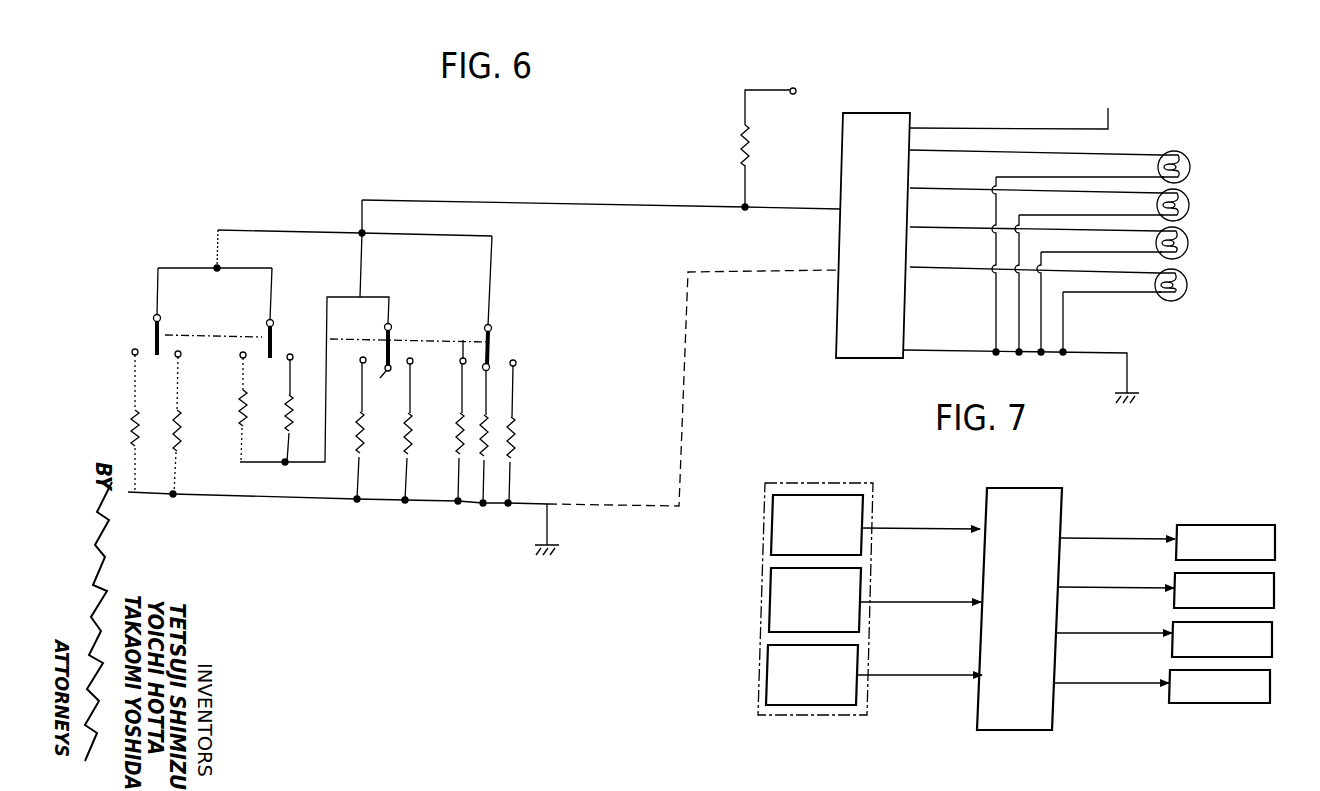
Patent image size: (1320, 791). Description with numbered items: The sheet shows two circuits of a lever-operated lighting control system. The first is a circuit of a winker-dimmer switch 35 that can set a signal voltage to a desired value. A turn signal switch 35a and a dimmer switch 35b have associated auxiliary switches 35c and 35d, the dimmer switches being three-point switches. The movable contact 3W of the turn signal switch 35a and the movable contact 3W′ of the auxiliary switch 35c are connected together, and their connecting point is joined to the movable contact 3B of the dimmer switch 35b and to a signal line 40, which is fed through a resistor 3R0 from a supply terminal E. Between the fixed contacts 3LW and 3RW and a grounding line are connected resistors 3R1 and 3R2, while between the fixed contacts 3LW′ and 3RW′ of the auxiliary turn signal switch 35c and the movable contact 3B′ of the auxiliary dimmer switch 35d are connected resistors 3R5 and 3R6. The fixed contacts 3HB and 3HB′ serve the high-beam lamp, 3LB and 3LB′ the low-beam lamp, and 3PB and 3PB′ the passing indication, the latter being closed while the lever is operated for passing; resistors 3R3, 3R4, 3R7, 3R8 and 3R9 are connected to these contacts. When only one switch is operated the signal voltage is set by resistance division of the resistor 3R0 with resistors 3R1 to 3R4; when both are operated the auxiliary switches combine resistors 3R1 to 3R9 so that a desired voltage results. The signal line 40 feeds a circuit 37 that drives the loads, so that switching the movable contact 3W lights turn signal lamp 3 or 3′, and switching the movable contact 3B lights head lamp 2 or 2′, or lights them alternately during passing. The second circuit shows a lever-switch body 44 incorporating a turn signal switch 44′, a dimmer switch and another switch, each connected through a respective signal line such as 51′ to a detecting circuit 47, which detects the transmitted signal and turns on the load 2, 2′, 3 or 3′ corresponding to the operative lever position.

In FIG. 6, the head lamp 2 is at (1191, 168).
In FIG. 7, the head lamp 2 is at (1276, 543).
In FIG. 6, the head lamp 2′ is at (1190, 206).
In FIG. 7, the head lamp 2′ is at (1275, 591).
In FIG. 6, the turn signal lamp 3 is at (1189, 244).
In FIG. 7, the turn signal lamp 3 is at (1273, 638).
In FIG. 6, the turn signal lamp 3′ is at (1188, 286).
In FIG. 7, the turn signal lamp 3′ is at (1271, 686).
In FIG. 6, the winker-dimmer switch 35 is at (288, 239).
In FIG. 6, the turn signal switch 35a is at (130, 376).
In FIG. 6, the dimmer switch 35b is at (502, 365).
In FIG. 6, the auxiliary switch 35c is at (241, 361).
In FIG. 6, the auxiliary switch 35d is at (372, 361).
In FIG. 6, the decoder / drive circuit 37 is at (870, 113).
In FIG. 6, the signal line 40 is at (529, 205).
In FIG. 6, the voltage source terminal E is at (791, 80).
In FIG. 6, the resistor 3R0 is at (741, 143).
In FIG. 6, the resistor 3R1 is at (129, 421).
In FIG. 6, the resistor 3R2 is at (181, 437).
In FIG. 6, the resistor 3R3 is at (457, 428).
In FIG. 6, the resistor 3R4 is at (484, 449).
In FIG. 6, the resistor 3R5 is at (239, 414).
In FIG. 6, the resistor 3R6 is at (285, 410).
In FIG. 6, the resistor 3R7 is at (360, 442).
In FIG. 6, the resistor 3R8 is at (516, 428).
In FIG. 6, the resistor 3R9 is at (405, 428).
In FIG. 6, the movable contact 3W is at (154, 334).
In FIG. 6, the movable contact 3W′ is at (273, 320).
In FIG. 6, the fixed contact 3LW is at (131, 353).
In FIG. 6, the fixed contact 3LW′ is at (239, 328).
In FIG. 6, the fixed contact 3RW is at (182, 355).
In FIG. 6, the fixed contact 3RW′ is at (303, 363).
In FIG. 6, the fixed contact 3HB is at (461, 367).
In FIG. 6, the fixed contact 3HB′ is at (356, 372).
In FIG. 6, the movable contact 3B is at (498, 320).
In FIG. 6, the movable contact 3B′ is at (397, 318).
In FIG. 6, the fixed contact 3LB is at (489, 364).
In FIG. 6, the fixed contact 3LB′ is at (389, 381).
In FIG. 6, the fixed contact 3PB is at (516, 363).
In FIG. 6, the fixed contact 3PB′ is at (413, 361).
In FIG. 7, the lever-switch body 44 is at (835, 486).
In FIG. 7, the turn signal switch 44′ is at (783, 516).
In FIG. 7, the detecting circuit 47 is at (1017, 486).
In FIG. 7, the signal line 51′ is at (918, 527).